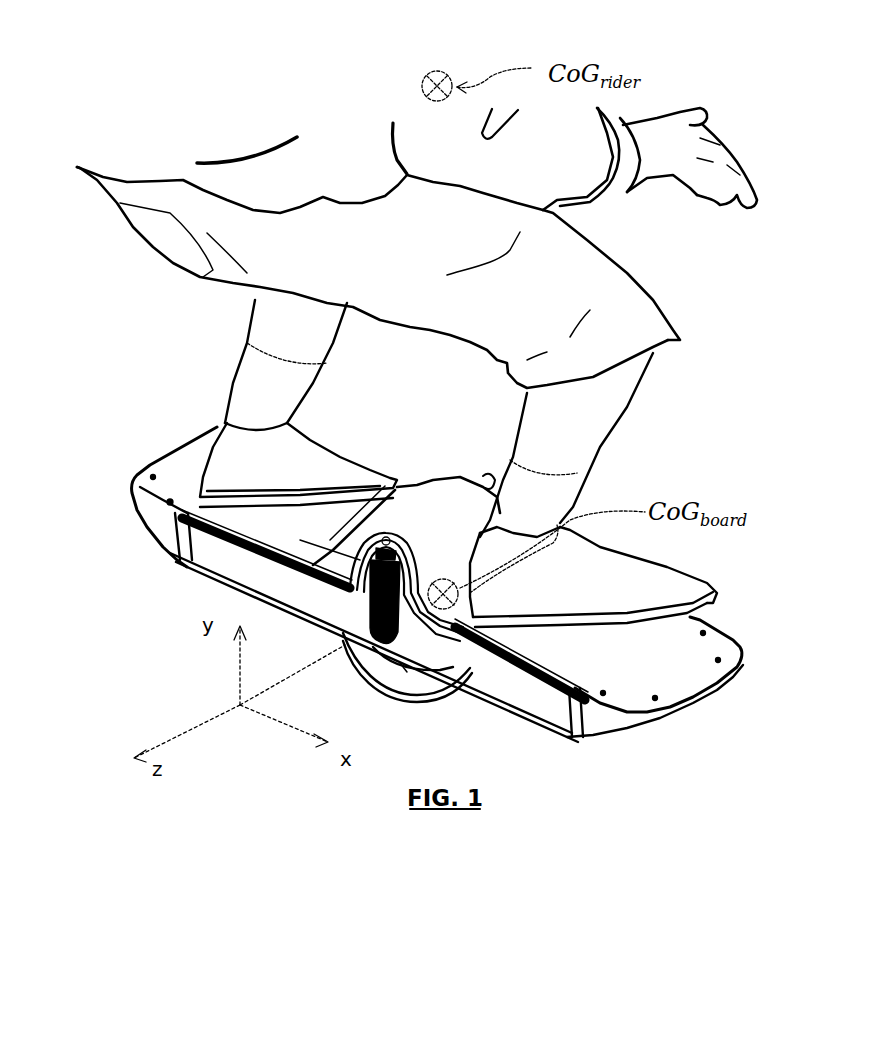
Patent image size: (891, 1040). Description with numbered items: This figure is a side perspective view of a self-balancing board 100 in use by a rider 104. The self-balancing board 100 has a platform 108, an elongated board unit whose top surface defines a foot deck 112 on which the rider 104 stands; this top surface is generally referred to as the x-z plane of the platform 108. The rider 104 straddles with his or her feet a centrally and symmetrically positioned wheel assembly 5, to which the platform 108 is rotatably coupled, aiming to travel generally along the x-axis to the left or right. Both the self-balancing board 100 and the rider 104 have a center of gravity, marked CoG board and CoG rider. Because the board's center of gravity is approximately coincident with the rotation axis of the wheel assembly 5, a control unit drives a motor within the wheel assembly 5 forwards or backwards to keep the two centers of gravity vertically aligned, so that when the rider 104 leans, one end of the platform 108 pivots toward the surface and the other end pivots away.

The self-balancing board 100 is at (150, 432).
The rider 104 is at (682, 300).
The platform 108 is at (125, 494).
The foot deck 112 is at (693, 662).
The wheel assembly 5 is at (430, 708).